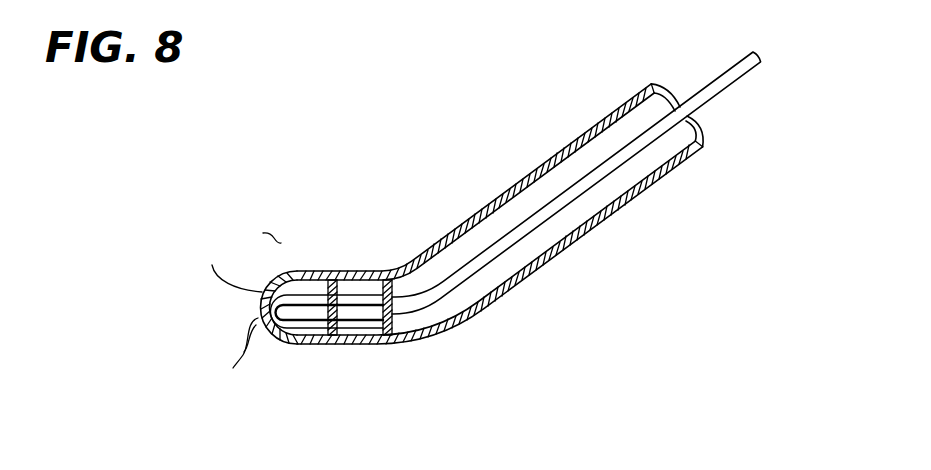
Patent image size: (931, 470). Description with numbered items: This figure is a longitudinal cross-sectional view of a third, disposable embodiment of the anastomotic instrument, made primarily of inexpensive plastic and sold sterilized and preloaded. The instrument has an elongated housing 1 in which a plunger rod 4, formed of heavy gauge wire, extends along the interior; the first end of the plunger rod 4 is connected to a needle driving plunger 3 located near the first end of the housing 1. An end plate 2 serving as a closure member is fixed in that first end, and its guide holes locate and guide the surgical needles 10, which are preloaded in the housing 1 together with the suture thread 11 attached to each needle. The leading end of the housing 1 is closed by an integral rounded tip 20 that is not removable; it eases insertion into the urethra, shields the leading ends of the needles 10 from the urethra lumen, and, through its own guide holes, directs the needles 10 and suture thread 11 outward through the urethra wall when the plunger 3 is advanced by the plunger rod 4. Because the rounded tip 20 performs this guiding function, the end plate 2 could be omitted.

The housing 1 is at (613, 212).
The end plate 2 is at (331, 281).
The needle driving plunger 3 is at (393, 280).
The plunger rod 4 is at (641, 153).
The surgical needles 10 is at (304, 328).
The suture thread 11 is at (263, 278).
The integral rounded tip 20 is at (258, 312).